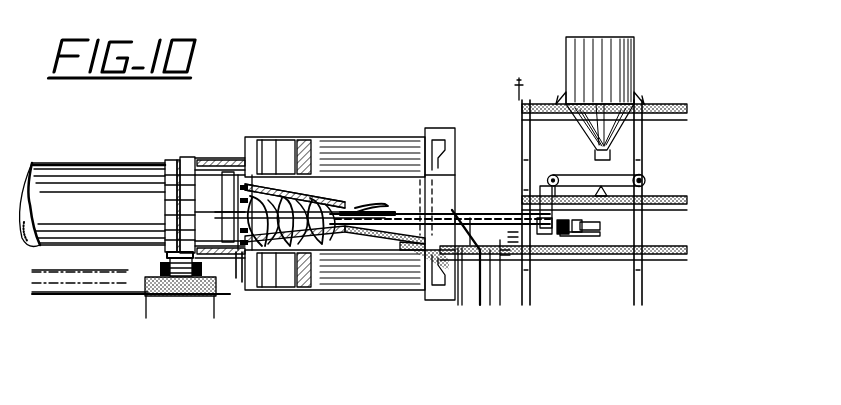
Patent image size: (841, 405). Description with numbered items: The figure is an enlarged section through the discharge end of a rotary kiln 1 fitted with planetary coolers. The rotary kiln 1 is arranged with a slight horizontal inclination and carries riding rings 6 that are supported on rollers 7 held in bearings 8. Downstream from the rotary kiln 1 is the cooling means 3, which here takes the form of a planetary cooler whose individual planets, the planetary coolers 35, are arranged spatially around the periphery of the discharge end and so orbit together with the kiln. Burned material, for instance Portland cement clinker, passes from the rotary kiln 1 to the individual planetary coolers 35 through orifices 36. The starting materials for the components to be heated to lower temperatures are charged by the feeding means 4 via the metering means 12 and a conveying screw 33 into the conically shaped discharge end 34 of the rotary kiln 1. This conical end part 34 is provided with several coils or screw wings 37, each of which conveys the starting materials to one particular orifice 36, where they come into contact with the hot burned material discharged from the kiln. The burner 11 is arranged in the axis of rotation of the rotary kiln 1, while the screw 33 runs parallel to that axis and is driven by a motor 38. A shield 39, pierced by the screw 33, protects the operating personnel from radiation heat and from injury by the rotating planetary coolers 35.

The rotary kiln 1 is at (109, 166).
The riding rings 6 is at (183, 160).
The cooling means 3 is at (355, 133).
The conically shaped discharge end 34 is at (284, 196).
The screw wings 37 is at (316, 203).
The burner 11 is at (325, 222).
The planetary coolers 35 is at (345, 292).
The orifices 36 is at (252, 260).
The shield 39 is at (415, 252).
The conveying screw 33 is at (505, 205).
The feeding means 4 is at (632, 86).
The metering means 12 is at (641, 176).
The motor 38 is at (578, 238).
The rollers 7 is at (160, 272).
The bearings 8 is at (146, 301).